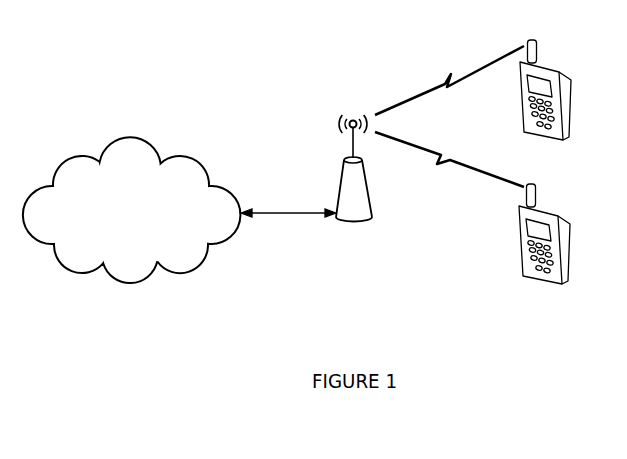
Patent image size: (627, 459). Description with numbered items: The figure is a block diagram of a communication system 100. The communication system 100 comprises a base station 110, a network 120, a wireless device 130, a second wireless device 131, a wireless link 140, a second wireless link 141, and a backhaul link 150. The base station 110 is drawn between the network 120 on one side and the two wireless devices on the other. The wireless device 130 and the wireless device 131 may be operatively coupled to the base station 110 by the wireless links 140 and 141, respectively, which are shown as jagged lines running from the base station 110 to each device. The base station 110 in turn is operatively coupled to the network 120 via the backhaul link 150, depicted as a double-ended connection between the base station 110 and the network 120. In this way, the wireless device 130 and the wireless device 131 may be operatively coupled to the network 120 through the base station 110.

The communication system 100 is at (57, 41).
The base station 110 is at (366, 218).
The network 120 is at (115, 228).
The wireless device 130 is at (563, 140).
The wireless device 131 is at (562, 285).
The wireless link 140 is at (447, 88).
The wireless link 141 is at (443, 151).
The backhaul link 150 is at (303, 212).